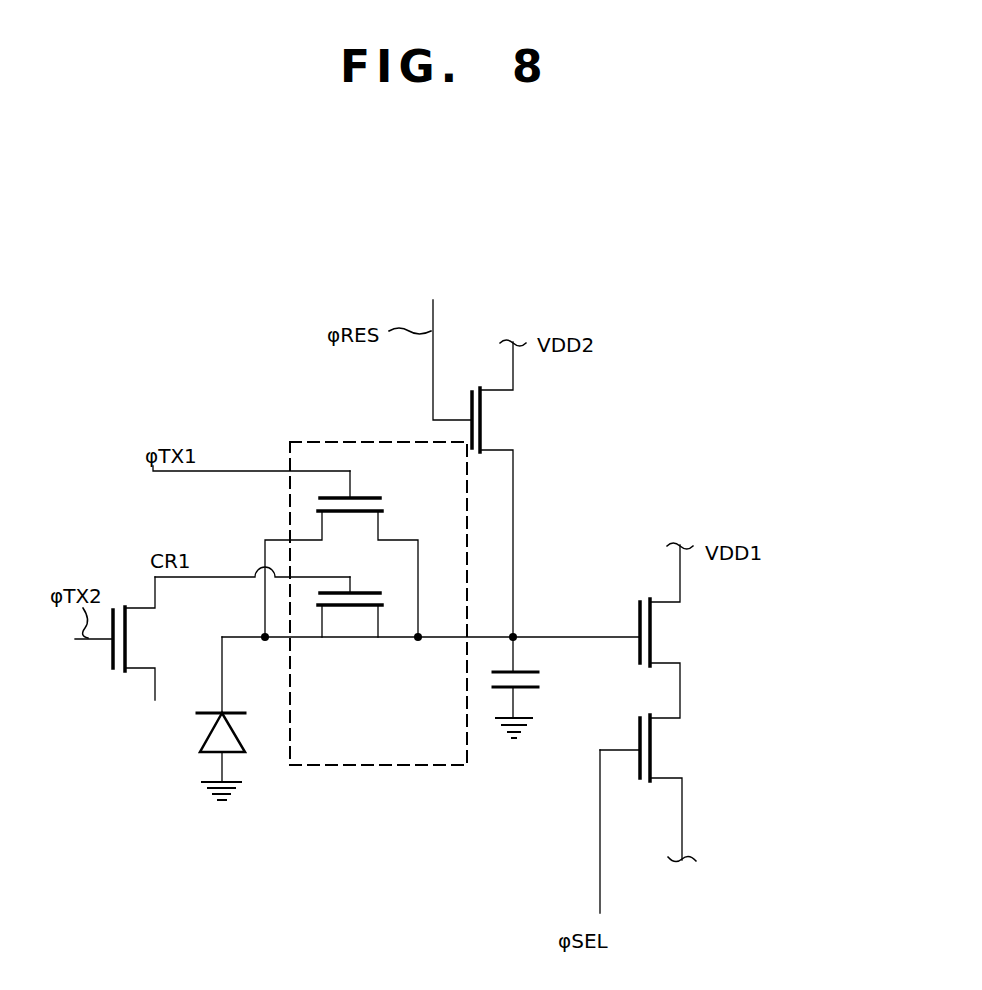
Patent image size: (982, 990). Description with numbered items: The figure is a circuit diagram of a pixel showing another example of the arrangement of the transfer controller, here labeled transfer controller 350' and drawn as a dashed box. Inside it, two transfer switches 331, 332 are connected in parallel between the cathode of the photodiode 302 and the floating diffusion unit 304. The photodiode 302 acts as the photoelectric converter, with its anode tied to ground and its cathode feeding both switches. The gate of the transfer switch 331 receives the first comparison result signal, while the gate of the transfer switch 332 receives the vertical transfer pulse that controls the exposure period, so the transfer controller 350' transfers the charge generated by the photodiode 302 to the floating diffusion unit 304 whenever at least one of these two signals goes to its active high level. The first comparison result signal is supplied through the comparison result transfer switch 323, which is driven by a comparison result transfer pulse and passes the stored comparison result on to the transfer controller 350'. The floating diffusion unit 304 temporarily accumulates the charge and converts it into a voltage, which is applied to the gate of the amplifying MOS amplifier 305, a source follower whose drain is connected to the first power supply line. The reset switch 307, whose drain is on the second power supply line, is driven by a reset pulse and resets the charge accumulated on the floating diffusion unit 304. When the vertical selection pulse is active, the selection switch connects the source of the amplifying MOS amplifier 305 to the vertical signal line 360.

The photodiode 302 is at (207, 737).
The floating diffusion unit 304 is at (489, 679).
The amplifying MOS amplifier 305 is at (663, 657).
The reset switch 307 is at (490, 421).
The comparison result transfer switch 323 is at (111, 658).
The transfer switch 331 is at (363, 625).
The transfer switch 332 is at (380, 530).
The transfer controller 350' is at (378, 650).
The vertical signal line 360 is at (684, 834).